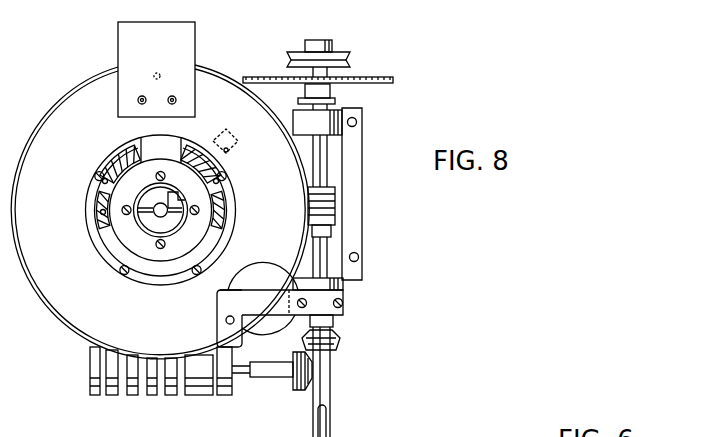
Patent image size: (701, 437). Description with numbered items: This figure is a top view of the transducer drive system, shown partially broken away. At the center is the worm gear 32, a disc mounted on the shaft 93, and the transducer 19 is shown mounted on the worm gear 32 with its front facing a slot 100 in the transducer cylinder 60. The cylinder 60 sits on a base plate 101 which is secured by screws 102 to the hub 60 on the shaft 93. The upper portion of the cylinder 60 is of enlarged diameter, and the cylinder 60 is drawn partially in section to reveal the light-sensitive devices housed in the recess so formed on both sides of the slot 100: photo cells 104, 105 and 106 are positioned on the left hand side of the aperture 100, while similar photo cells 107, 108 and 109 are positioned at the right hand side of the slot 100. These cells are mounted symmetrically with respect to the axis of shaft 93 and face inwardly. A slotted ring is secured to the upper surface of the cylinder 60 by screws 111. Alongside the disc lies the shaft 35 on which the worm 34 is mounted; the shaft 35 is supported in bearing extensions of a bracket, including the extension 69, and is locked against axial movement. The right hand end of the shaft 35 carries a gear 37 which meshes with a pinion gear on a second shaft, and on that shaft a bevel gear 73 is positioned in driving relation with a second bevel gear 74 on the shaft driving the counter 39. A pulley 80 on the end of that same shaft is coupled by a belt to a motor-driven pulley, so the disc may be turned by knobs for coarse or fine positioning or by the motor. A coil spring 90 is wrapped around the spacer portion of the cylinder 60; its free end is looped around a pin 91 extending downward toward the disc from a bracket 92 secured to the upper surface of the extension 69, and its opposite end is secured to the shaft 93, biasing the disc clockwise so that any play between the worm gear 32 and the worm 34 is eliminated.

The transducer 19 is at (196, 40).
The worm gear 32 is at (80, 328).
The worm 34 is at (336, 206).
The shaft 35 is at (332, 394).
The gear 37 is at (370, 84).
The counter 39 is at (130, 397).
The transducer cylinder 60 is at (236, 234).
The extension 69 is at (345, 285).
The bevel gear 73 is at (341, 345).
The second bevel gear 74 is at (292, 380).
The pulley 80 is at (342, 53).
The coil spring 90 is at (216, 292).
The pin 91 is at (235, 318).
The bracket 92 is at (343, 298).
The shaft 93 is at (158, 209).
The slot 100 is at (156, 142).
The base plate 101 is at (150, 255).
The screws 102 is at (161, 250).
The photo cell 104 is at (118, 155).
The photo cell 105 is at (102, 182).
The photo cell 106 is at (96, 212).
The photo cell 107 is at (200, 158).
The photo cell 108 is at (219, 183).
The photo cell 109 is at (224, 213).
The screws 111 is at (118, 272).